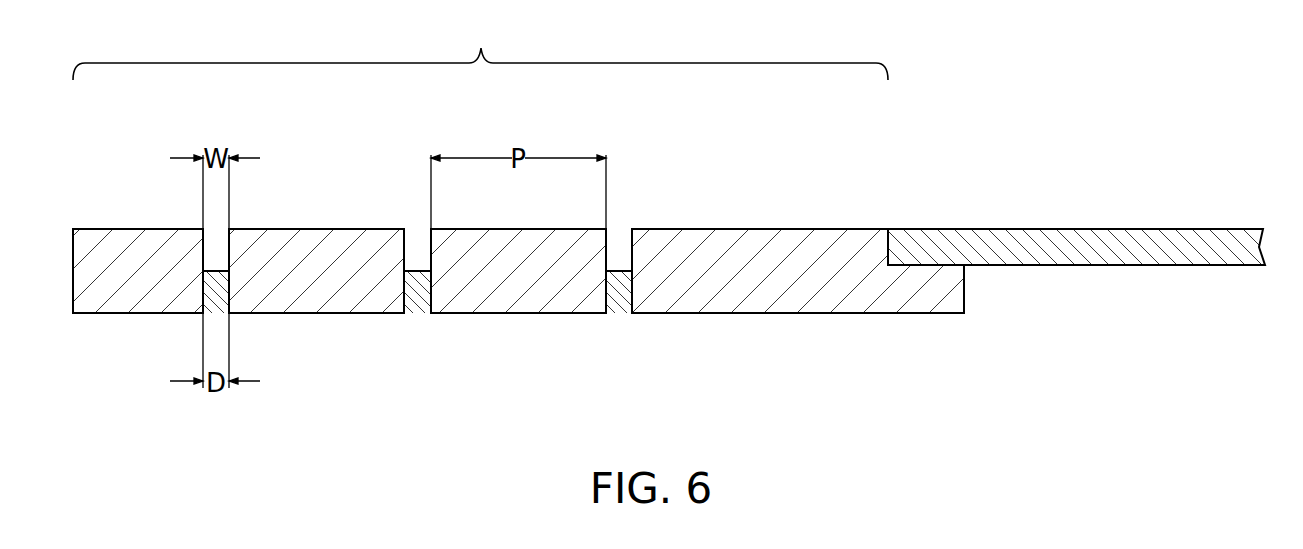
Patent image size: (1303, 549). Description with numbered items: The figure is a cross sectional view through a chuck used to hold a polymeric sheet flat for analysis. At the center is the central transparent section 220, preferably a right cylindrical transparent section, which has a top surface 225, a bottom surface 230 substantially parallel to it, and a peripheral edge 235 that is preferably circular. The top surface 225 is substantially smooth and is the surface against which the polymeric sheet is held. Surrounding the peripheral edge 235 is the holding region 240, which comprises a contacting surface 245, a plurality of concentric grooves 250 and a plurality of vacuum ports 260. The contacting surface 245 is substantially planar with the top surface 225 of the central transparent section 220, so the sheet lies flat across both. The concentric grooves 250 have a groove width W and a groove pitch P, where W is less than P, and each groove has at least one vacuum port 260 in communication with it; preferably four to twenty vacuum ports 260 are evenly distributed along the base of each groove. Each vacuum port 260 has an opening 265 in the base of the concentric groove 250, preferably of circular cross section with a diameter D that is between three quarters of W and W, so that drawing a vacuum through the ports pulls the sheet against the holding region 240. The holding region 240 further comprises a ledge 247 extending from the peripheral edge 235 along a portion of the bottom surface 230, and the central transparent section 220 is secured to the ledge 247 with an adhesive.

The central transparent section 220 is at (1158, 238).
The top surface 225 is at (1084, 228).
The bottom surface 230 is at (1082, 267).
The peripheral edge 235 is at (891, 245).
The holding region 240 is at (480, 49).
The contacting surface 245 is at (152, 228).
The ledge 247 is at (919, 266).
The concentric grooves 250 is at (417, 237).
The vacuum ports 260 is at (212, 305).
The opening 265 is at (217, 272).